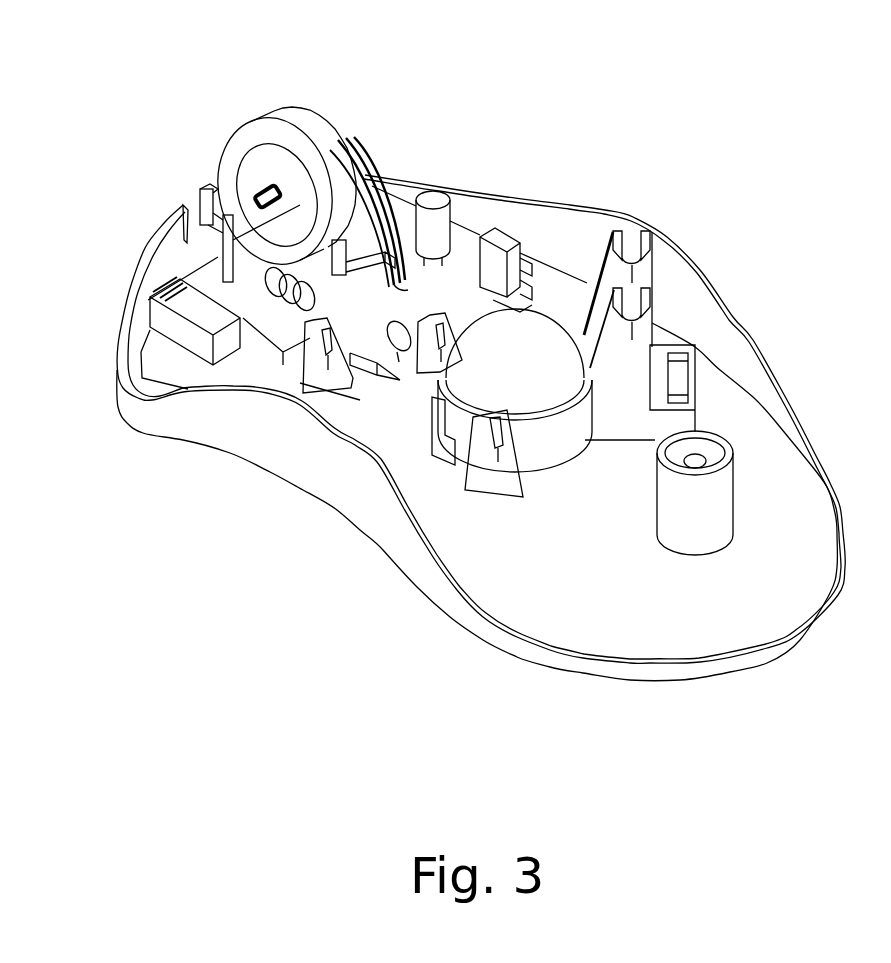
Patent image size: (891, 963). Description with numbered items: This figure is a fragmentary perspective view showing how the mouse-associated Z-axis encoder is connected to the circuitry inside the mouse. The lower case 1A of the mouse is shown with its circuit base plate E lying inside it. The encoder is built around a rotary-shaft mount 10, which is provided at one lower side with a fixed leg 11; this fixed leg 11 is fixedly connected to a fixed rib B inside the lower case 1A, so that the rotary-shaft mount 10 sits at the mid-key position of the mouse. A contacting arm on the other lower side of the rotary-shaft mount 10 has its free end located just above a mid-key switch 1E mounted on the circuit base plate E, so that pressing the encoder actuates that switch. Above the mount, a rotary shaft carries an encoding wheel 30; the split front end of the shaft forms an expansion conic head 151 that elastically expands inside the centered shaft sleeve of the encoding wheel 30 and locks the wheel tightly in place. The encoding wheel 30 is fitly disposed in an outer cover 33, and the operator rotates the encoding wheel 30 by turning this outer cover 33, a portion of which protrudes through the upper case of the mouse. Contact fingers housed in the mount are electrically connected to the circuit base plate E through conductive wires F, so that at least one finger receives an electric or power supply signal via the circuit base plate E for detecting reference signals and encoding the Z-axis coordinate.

The rotary-shaft mount 10 is at (383, 92).
The lower case 1A is at (753, 387).
The mid-key switch 1E is at (377, 362).
The fixed rib B is at (227, 257).
The fixed leg 11 is at (223, 257).
The encoding wheel 30 is at (272, 157).
The outer cover 33 is at (307, 130).
The expansion conic head 151 is at (259, 200).
The conductive wires F is at (365, 152).
The circuit base plate E is at (463, 238).